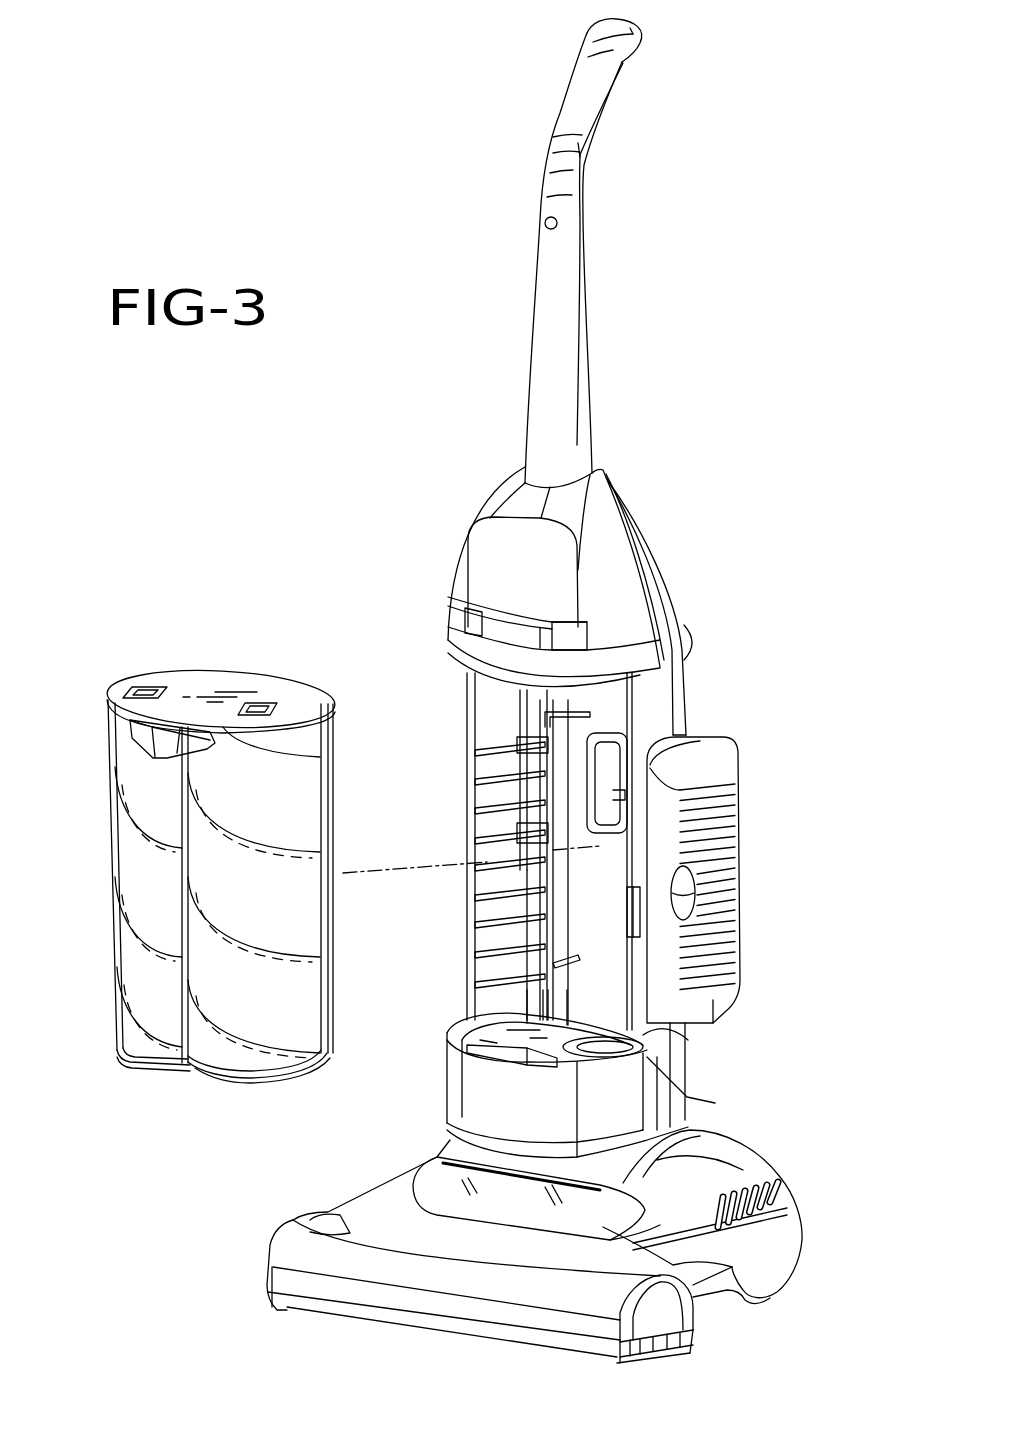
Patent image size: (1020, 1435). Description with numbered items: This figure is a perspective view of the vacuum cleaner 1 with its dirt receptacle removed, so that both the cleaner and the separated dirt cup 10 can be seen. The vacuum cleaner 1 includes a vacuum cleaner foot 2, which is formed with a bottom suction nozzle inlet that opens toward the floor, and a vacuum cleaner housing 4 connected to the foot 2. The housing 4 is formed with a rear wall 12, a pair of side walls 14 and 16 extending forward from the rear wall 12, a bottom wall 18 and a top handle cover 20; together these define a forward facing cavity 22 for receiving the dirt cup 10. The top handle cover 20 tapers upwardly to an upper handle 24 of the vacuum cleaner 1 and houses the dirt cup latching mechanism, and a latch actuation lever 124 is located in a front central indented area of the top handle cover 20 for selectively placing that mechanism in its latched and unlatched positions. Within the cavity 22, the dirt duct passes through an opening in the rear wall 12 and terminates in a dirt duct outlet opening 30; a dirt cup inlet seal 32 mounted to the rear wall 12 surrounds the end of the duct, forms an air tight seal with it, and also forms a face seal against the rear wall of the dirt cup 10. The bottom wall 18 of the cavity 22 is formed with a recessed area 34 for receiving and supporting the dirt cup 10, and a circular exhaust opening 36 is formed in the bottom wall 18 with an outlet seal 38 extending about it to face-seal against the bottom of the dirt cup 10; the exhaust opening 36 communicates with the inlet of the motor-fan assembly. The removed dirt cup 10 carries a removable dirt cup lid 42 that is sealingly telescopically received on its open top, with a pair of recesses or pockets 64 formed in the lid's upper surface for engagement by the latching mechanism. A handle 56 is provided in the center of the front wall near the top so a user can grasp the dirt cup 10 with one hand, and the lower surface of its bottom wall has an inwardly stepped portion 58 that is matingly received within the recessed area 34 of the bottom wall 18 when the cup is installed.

The vacuum cleaner 1 is at (690, 458).
The vacuum cleaner foot 2 is at (760, 1145).
The vacuum cleaner housing 4 is at (680, 560).
The dirt cup 10 is at (152, 1073).
The rear wall 12 is at (587, 923).
The side wall 14 is at (676, 678).
The side wall 16 is at (497, 692).
The bottom wall 18 is at (470, 1026).
The top handle cover 20 is at (495, 499).
The forward facing cavity 22 is at (577, 766).
The upper handle 24 is at (572, 330).
The dirt duct outlet opening 30 is at (612, 765).
The dirt cup inlet seal 32 is at (613, 767).
The recessed area 34 is at (493, 1030).
The circular exhaust opening 36 is at (617, 1043).
The outlet seal 38 is at (637, 1045).
The dirt cup lid 42 is at (180, 668).
The handle 56 is at (143, 737).
The inwardly stepped portion 58 is at (233, 1083).
The recesses or pockets 64 is at (140, 692).
The latch actuation lever 124 is at (448, 604).